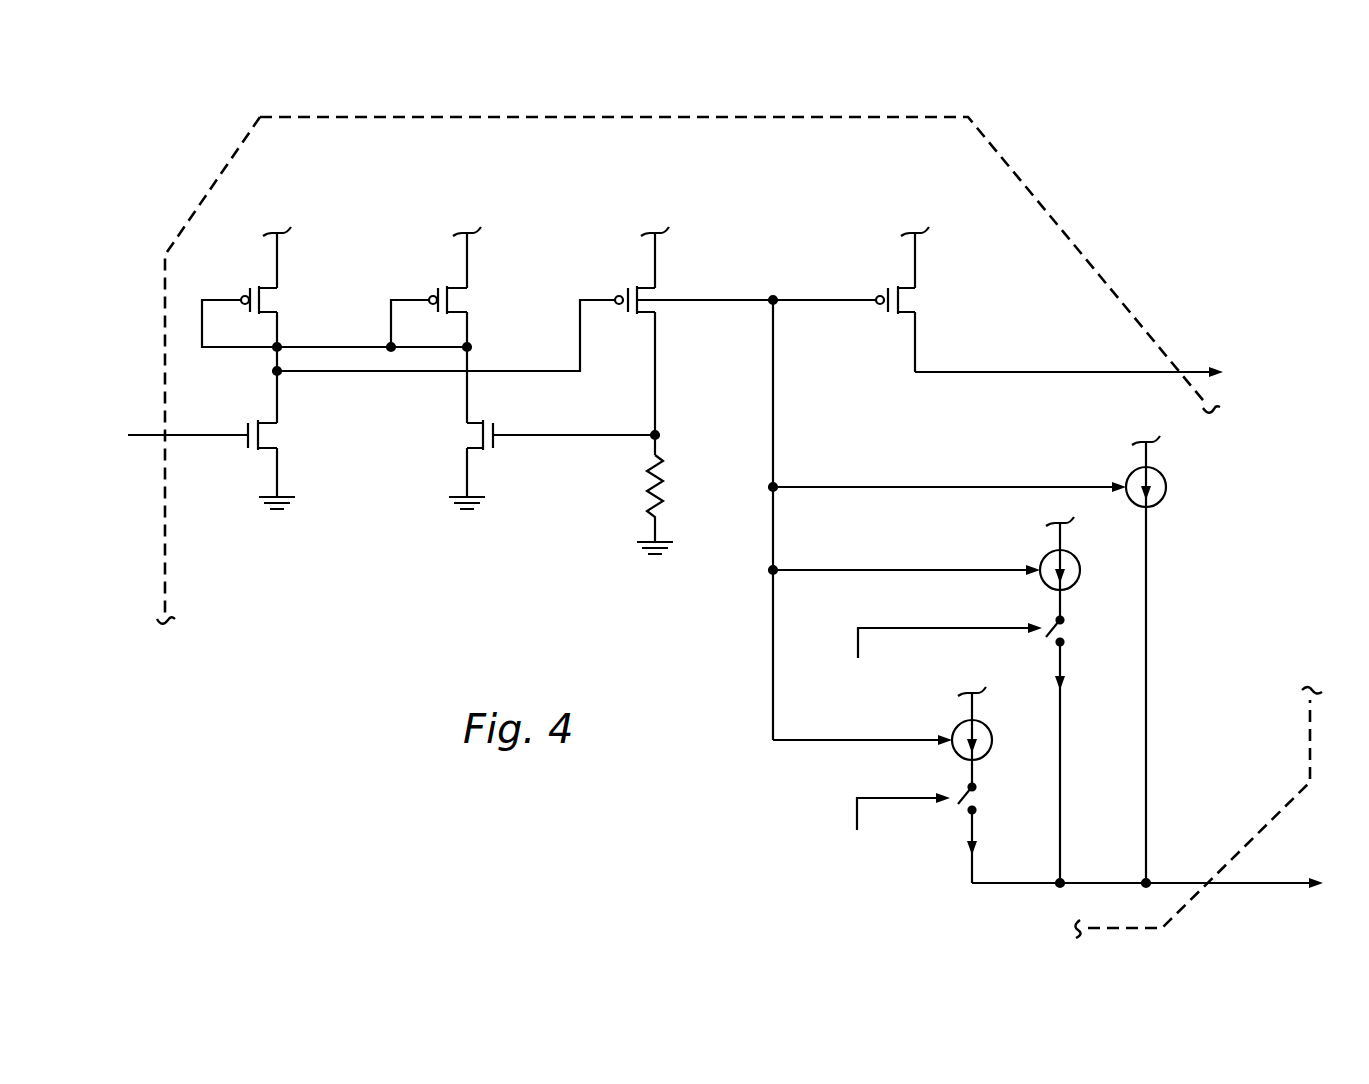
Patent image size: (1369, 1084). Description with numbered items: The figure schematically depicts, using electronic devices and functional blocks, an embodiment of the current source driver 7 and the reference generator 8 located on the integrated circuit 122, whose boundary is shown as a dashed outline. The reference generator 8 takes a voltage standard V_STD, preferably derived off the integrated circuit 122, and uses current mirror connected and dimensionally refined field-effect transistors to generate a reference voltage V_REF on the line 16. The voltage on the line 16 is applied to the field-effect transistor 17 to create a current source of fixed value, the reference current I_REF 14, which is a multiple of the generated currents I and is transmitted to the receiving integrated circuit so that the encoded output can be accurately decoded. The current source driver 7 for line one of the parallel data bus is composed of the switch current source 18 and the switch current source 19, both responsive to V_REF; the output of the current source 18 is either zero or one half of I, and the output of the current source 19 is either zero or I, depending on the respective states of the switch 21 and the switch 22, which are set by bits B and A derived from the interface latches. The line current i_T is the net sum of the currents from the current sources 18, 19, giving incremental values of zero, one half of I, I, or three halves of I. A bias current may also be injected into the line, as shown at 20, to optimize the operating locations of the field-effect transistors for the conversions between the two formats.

The integrated circuit 122 is at (241, 159).
The reference generator 8 is at (320, 552).
The line 16 is at (775, 392).
The field-effect transistor 17 is at (910, 298).
The I_REF 14 is at (1178, 372).
The bias current injection 20 is at (1160, 468).
The switch current source 19 is at (1072, 550).
The switch 22 is at (1070, 632).
The switch current source 18 is at (984, 720).
The switch 21 is at (982, 802).
The current source driver 7 is at (762, 802).